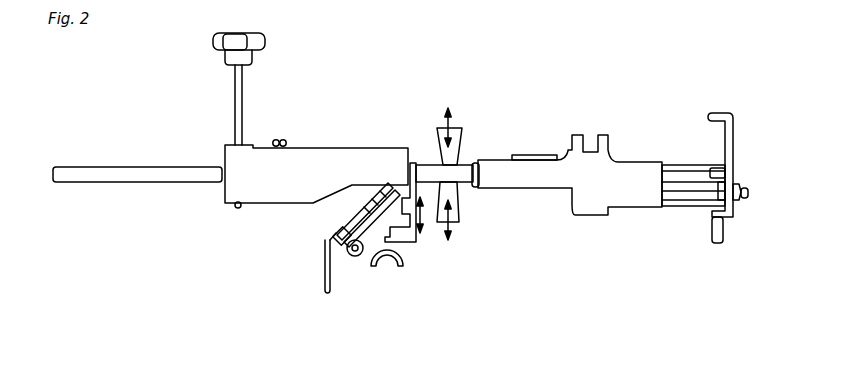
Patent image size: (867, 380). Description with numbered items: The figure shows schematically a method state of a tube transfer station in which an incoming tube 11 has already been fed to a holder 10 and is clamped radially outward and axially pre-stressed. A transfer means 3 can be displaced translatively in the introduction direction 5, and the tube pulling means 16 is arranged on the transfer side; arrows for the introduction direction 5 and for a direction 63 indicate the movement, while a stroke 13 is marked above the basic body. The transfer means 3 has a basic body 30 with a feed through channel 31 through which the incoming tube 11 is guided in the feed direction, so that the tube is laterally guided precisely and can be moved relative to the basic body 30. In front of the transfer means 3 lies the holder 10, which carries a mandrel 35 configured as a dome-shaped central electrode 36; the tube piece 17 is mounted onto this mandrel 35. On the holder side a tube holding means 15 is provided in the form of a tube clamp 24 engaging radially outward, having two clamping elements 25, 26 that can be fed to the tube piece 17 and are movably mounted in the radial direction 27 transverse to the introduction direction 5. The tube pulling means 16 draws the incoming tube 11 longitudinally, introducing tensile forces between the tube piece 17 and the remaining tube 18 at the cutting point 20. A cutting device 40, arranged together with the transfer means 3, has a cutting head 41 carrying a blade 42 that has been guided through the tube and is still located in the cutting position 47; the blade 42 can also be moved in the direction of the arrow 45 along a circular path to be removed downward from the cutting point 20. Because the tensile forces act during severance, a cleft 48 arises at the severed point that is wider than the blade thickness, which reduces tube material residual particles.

The transfer means 3 is at (377, 67).
The introduction direction 5 is at (748, 310).
The holder 10 is at (650, 114).
The incoming tube 11 is at (107, 182).
The stroke 13 is at (328, 129).
The tube holding means 15 is at (476, 92).
The tube pulling means 16 is at (314, 74).
The tube piece 17 is at (467, 163).
The remaining tube 18 is at (199, 183).
The cutting point 20 is at (412, 112).
The tube clamp 24 is at (450, 278).
The clamping element 25 is at (438, 130).
The clamping element 26 is at (460, 205).
The radial direction 27 is at (453, 118).
The basic body 30 is at (292, 180).
The feed through channel 31 is at (215, 163).
The mandrel 35 is at (472, 160).
The central electrode 36 is at (476, 190).
The cutting device 40 is at (294, 259).
The cutting head 41 is at (340, 213).
The blade 42 is at (422, 165).
The arrow 45 is at (385, 262).
The cutting position 47 is at (399, 156).
The cleft 48 is at (409, 173).
The direction of movement 63 is at (685, 310).